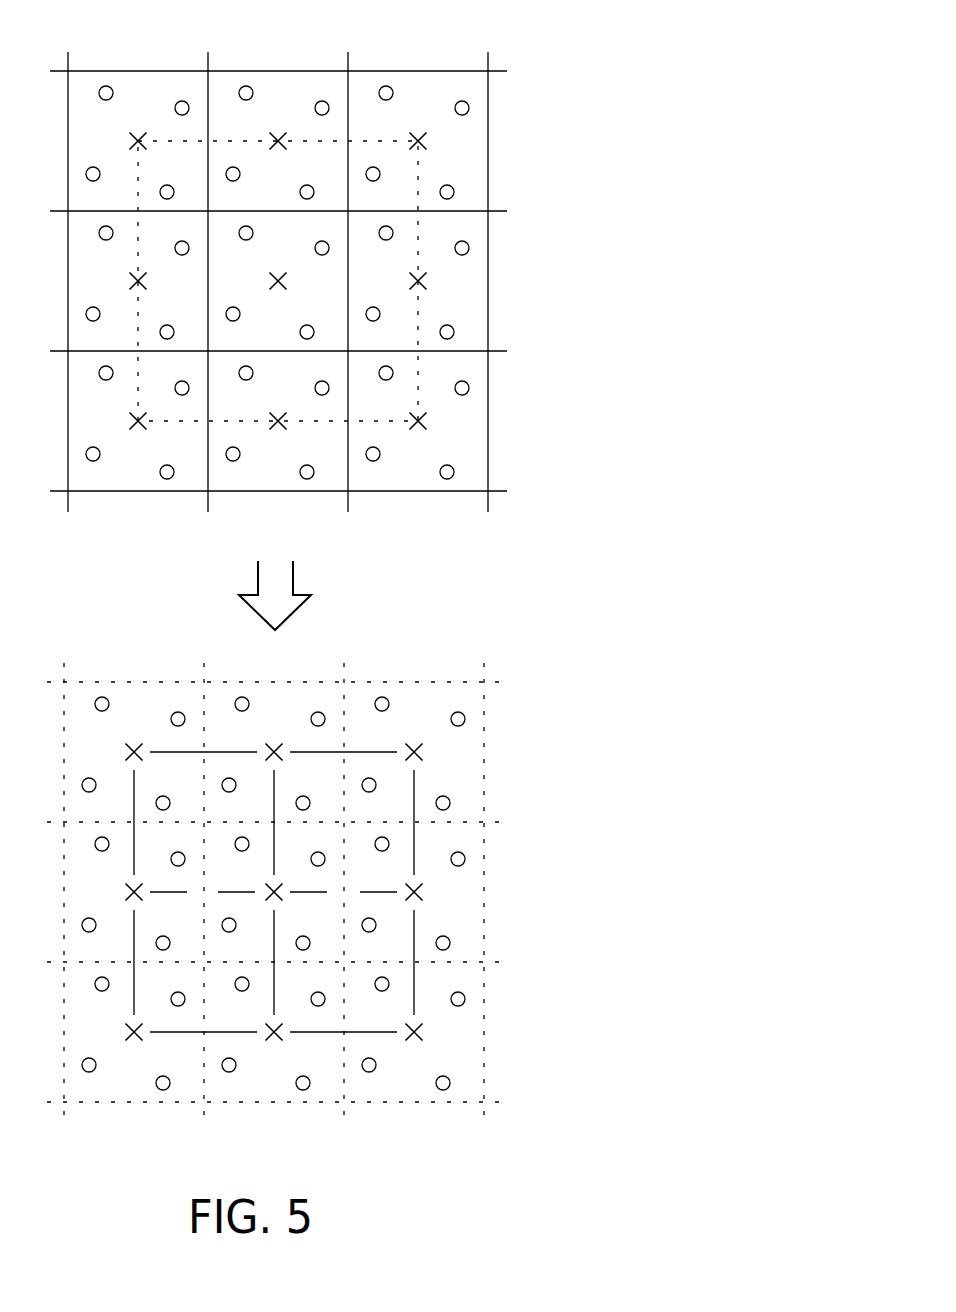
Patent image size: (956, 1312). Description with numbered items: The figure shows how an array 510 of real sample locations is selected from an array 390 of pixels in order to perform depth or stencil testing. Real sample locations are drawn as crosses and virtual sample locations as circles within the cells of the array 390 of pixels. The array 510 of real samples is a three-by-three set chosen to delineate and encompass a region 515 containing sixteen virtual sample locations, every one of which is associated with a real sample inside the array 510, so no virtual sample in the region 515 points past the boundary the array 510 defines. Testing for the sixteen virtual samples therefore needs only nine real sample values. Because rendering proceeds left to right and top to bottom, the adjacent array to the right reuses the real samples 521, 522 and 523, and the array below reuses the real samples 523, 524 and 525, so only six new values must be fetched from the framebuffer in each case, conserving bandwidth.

The array of pixels 390 is at (548, 57).
The array of real sample locations 510 is at (417, 197).
The region 515 is at (380, 877).
The real sample 521 is at (420, 750).
The real sample 522 is at (420, 895).
The real sample 523 is at (422, 1034).
The real sample 524 is at (273, 1040).
The real sample 525 is at (133, 1040).